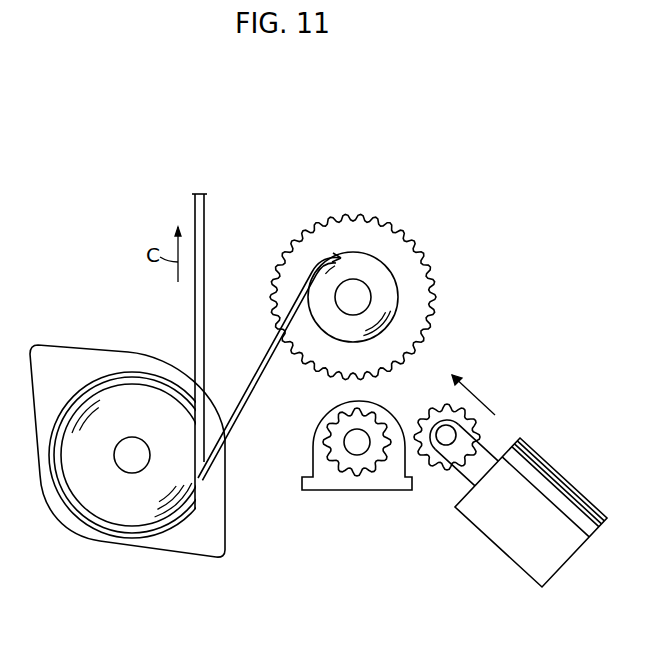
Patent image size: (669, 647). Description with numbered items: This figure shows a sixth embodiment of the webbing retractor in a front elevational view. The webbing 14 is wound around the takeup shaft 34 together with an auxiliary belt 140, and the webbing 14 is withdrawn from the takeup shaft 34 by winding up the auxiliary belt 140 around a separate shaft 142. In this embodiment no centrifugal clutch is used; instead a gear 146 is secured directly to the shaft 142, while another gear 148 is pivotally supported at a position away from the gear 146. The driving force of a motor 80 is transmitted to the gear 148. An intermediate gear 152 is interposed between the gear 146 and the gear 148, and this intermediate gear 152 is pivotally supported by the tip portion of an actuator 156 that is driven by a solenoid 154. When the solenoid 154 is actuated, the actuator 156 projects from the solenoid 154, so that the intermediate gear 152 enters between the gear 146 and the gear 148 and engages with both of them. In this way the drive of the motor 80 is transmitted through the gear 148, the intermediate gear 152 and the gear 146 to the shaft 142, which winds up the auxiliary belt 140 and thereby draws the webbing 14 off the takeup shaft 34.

The webbing 14 is at (219, 340).
The takeup shaft 34 is at (134, 446).
The motor 80 is at (377, 484).
The auxiliary belt 140 is at (258, 390).
The shaft 142 is at (362, 295).
The gear 146 is at (432, 316).
The gear 148 is at (338, 474).
The intermediate gear 152 is at (478, 421).
The solenoid 154 is at (550, 515).
The actuator 156 is at (463, 467).